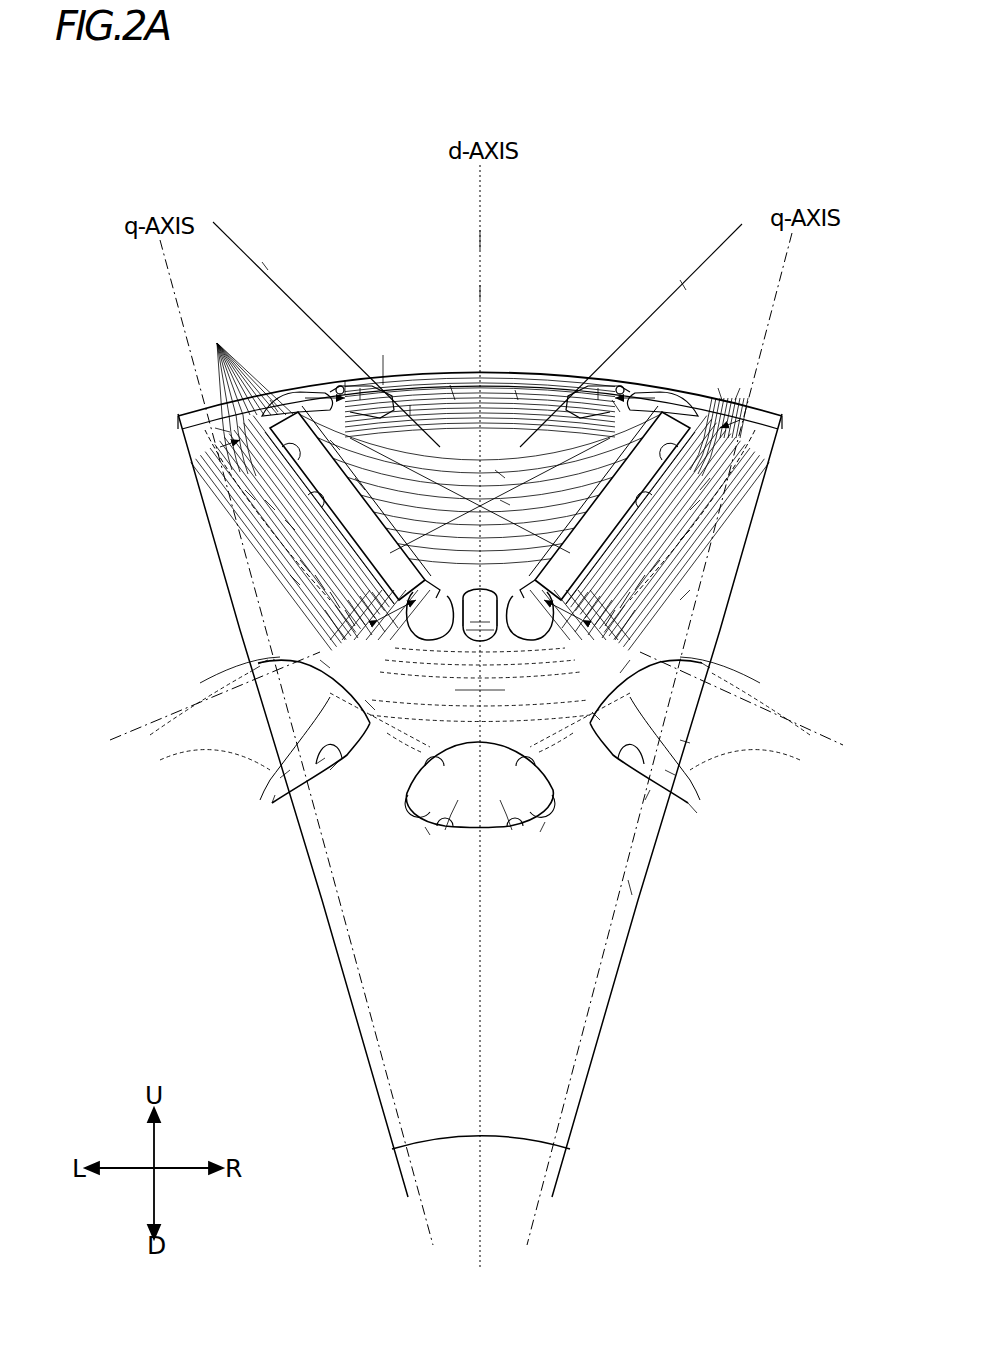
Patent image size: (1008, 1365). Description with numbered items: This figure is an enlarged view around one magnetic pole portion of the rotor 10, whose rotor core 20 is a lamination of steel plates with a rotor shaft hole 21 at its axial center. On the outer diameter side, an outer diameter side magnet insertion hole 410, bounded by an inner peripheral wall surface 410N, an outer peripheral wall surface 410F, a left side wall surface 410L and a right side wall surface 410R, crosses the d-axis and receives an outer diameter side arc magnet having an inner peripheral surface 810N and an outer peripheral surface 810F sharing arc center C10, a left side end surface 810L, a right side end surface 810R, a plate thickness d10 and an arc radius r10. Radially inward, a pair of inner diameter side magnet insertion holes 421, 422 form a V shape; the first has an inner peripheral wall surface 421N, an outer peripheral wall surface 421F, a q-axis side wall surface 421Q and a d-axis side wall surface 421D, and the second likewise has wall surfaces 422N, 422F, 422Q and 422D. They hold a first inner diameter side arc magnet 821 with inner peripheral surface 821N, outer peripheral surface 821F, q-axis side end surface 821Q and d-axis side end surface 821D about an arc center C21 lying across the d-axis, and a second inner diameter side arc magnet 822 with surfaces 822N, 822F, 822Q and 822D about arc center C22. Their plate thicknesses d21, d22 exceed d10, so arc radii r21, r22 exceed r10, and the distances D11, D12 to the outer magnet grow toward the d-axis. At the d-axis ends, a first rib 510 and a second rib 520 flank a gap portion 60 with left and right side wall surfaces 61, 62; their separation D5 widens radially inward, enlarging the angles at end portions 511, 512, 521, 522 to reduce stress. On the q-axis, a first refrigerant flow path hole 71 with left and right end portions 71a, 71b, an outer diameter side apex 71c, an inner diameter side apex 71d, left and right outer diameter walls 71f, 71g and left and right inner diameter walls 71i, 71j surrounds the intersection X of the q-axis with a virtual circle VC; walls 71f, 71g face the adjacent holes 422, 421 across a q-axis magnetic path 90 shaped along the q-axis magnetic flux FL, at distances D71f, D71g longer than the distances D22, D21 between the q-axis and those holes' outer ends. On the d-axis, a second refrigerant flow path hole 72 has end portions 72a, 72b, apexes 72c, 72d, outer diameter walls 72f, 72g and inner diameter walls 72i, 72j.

The rotor 10 is at (828, 140).
The rotor core 20 is at (178, 413).
The rotor shaft hole 21 is at (508, 1150).
The gap portion 60 is at (473, 592).
The left side wall surface 61 is at (462, 590).
The right side wall surface 62 is at (498, 590).
The first refrigerant flow path hole 71 is at (270, 690).
The left end portion 71a is at (675, 775).
The right end portion 71b is at (316, 764).
The outer diameter side apex 71c is at (258, 664).
The inner diameter side apex 71d is at (330, 770).
The left outer diameter wall 71f is at (690, 743).
The right outer diameter wall 71g is at (250, 672).
The left inner diameter wall 71i is at (280, 778).
The right inner diameter wall 71j is at (272, 803).
The second refrigerant flow path hole 72 is at (479, 785).
The left end portion 72a is at (425, 827).
The right end portion 72b is at (545, 822).
The outer diameter side apex 72c is at (445, 830).
The inner diameter side apex 72d is at (512, 830).
The left outer diameter wall 72f is at (407, 790).
The right outer diameter wall 72g is at (553, 790).
The left inner diameter wall 72i is at (445, 830).
The right inner diameter wall 72j is at (515, 830).
The q-axis magnetic path 90 is at (290, 575).
The outer diameter side magnet insertion hole 410 is at (588, 395).
The left side wall surface 410L is at (345, 380).
The inner peripheral wall surface 410N is at (450, 385).
The right side wall surface 410R is at (612, 400).
The outer peripheral wall surface 410F is at (360, 480).
The first inner diameter side magnet insertion hole 421 is at (233, 395).
The d-axis side wall surface 421D is at (365, 700).
The outer peripheral wall surface 421F is at (285, 520).
The inner peripheral wall surface 421N is at (383, 355).
The q-axis side wall surface 421Q is at (275, 400).
The second inner diameter side magnet insertion hole 422 is at (725, 450).
The d-axis side wall surface 422D is at (592, 712).
The outer peripheral wall surface 422F is at (690, 530).
The inner peripheral wall surface 422N is at (700, 500).
The q-axis side wall surface 422Q is at (740, 388).
The first rib 510 is at (375, 576).
The radially outer side end portion 511 is at (400, 558).
The radially inner side end portion 512 is at (440, 645).
The second rib 520 is at (600, 540).
The radially outer side end portion 521 is at (562, 558).
The radially inner side end portion 522 is at (520, 645).
The outer peripheral surface 810F is at (500, 475).
The left side end surface 810L is at (360, 388).
The inner peripheral surface 810N is at (515, 390).
The right side end surface 810R is at (598, 388).
The first inner diameter side arc magnet 821 is at (305, 542).
The d-axis side end surface 821D is at (330, 668).
The outer peripheral surface 821F is at (345, 570).
The inner peripheral surface 821N is at (330, 440).
The q-axis side end surface 821Q is at (215, 428).
The second inner diameter side arc magnet 822 is at (700, 570).
The d-axis side end surface 822D is at (620, 673).
The outer peripheral surface 822F is at (700, 662).
The inner peripheral surface 822N is at (500, 500).
The q-axis side end surface 822Q is at (718, 388).
The arc center C10 is at (483, 236).
The arc center C21 is at (637, 321).
The arc center C22 is at (325, 322).
The distance D11 is at (320, 398).
The distance D12 is at (665, 400).
The distance D21 is at (220, 447).
The distance D22 is at (740, 420).
The distance D5 is at (480, 702).
The distance D71f is at (582, 620).
The distance D71g is at (378, 620).
The q-axis magnetic flux FL is at (248, 395).
The virtual circle VC is at (858, 746).
The intersection X is at (491, 652).
The plate thickness d10 is at (410, 405).
The plate thickness d21 is at (245, 490).
The plate thickness d22 is at (710, 478).
The arc radius r10 is at (483, 288).
The arc radius r21 is at (680, 280).
The arc radius r22 is at (262, 262).